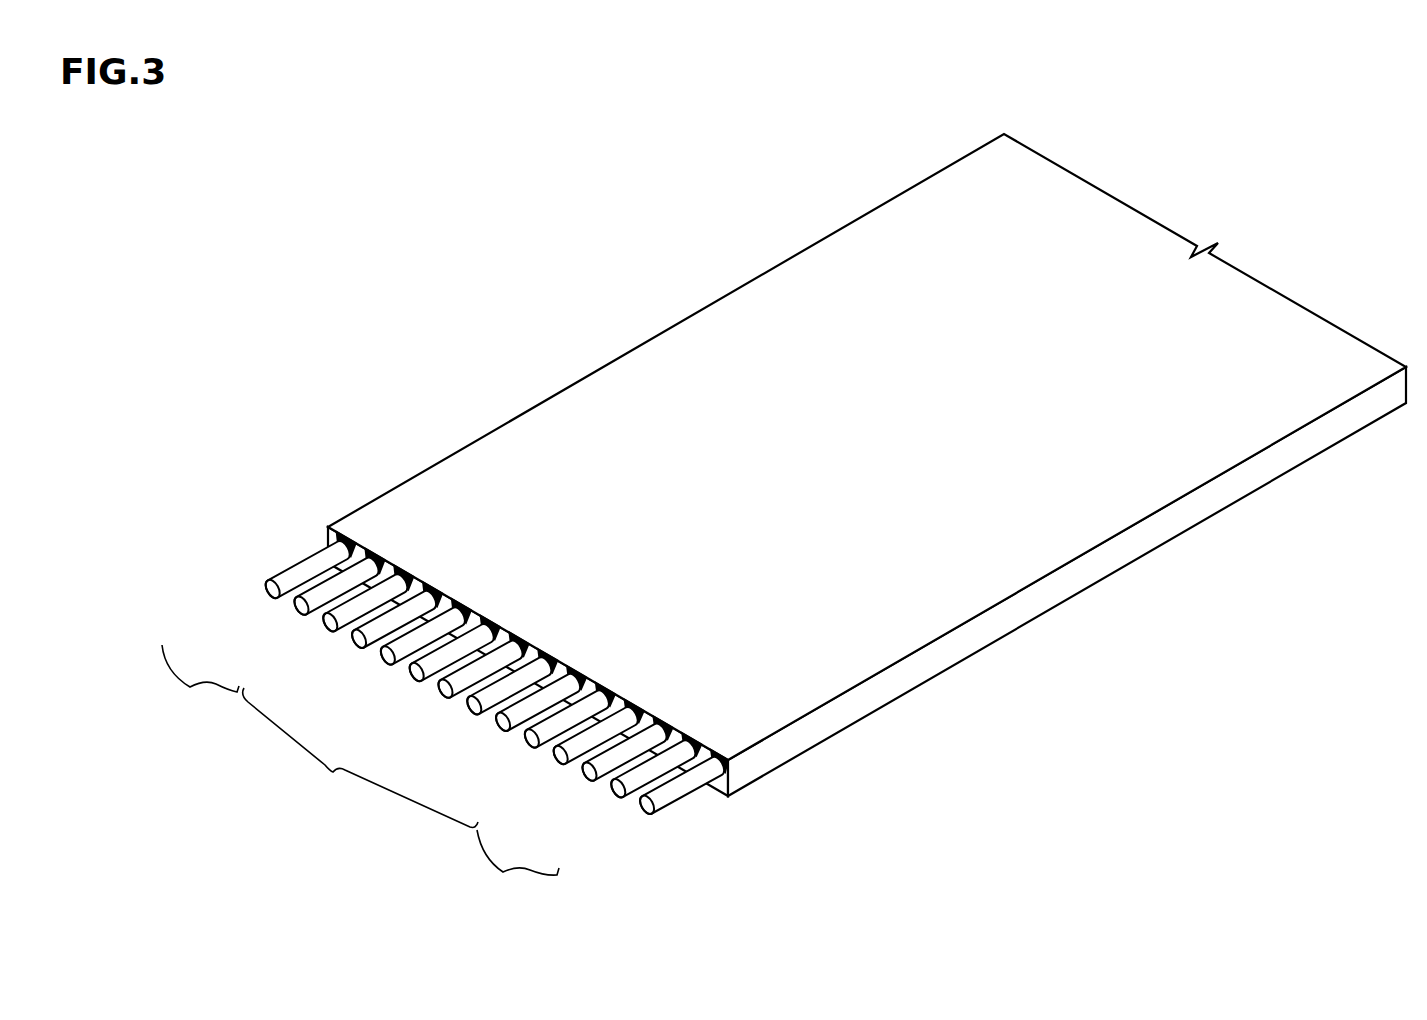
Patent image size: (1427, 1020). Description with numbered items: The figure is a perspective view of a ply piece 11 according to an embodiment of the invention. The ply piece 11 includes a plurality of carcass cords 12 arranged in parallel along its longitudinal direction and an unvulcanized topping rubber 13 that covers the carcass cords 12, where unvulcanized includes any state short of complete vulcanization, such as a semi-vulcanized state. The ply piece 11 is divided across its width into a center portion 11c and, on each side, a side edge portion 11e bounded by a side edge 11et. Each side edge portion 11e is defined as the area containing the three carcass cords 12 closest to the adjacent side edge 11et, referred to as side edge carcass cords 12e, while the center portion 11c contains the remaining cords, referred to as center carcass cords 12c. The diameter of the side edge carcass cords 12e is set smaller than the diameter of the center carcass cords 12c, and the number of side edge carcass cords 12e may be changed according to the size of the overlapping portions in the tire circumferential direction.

The ply piece 11 is at (867, 461).
The side edge 11et is at (663, 331).
The side edge portion 11e is at (356, 772).
The center portion 11c is at (360, 757).
The carcass cords 12 is at (478, 687).
The center carcass cords 12c is at (523, 717).
The side edge carcass cords 12e is at (320, 598).
The topping rubber 13 is at (970, 544).